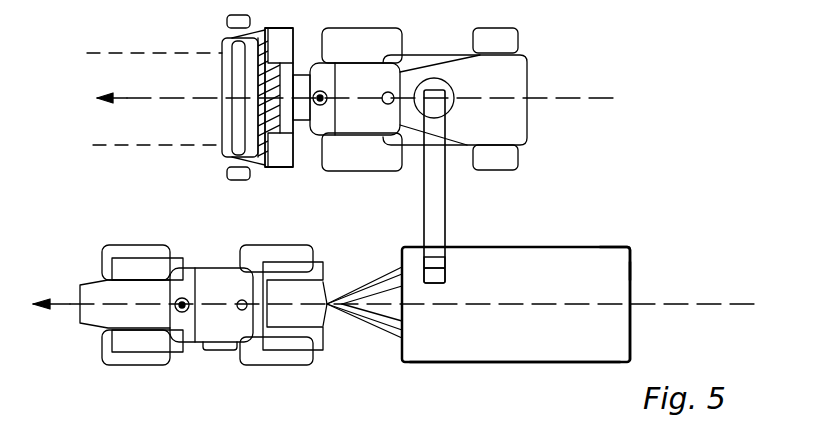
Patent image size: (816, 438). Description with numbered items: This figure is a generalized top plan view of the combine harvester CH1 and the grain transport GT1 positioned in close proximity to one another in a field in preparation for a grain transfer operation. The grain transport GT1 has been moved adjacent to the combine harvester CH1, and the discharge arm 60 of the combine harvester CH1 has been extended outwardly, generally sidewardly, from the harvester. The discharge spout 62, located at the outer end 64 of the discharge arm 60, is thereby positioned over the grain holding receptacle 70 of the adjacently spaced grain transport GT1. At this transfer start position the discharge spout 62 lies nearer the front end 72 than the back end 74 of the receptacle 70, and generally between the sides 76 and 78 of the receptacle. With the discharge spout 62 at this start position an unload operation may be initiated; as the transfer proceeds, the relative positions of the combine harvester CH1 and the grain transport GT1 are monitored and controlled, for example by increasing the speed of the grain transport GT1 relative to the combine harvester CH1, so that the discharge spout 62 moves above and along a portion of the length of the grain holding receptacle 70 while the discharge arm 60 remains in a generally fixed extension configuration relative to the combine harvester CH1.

The discharge arm 60 is at (433, 200).
The discharge spout 62 is at (447, 282).
The outer end 64 is at (425, 265).
The grain holding receptacle 70 is at (530, 352).
The front end 72 is at (402, 320).
The back end 74 is at (630, 325).
The side 76 is at (627, 250).
The side 78 is at (462, 358).
The combine harvester CH1 is at (537, 65).
The grain transport GT1 is at (380, 374).